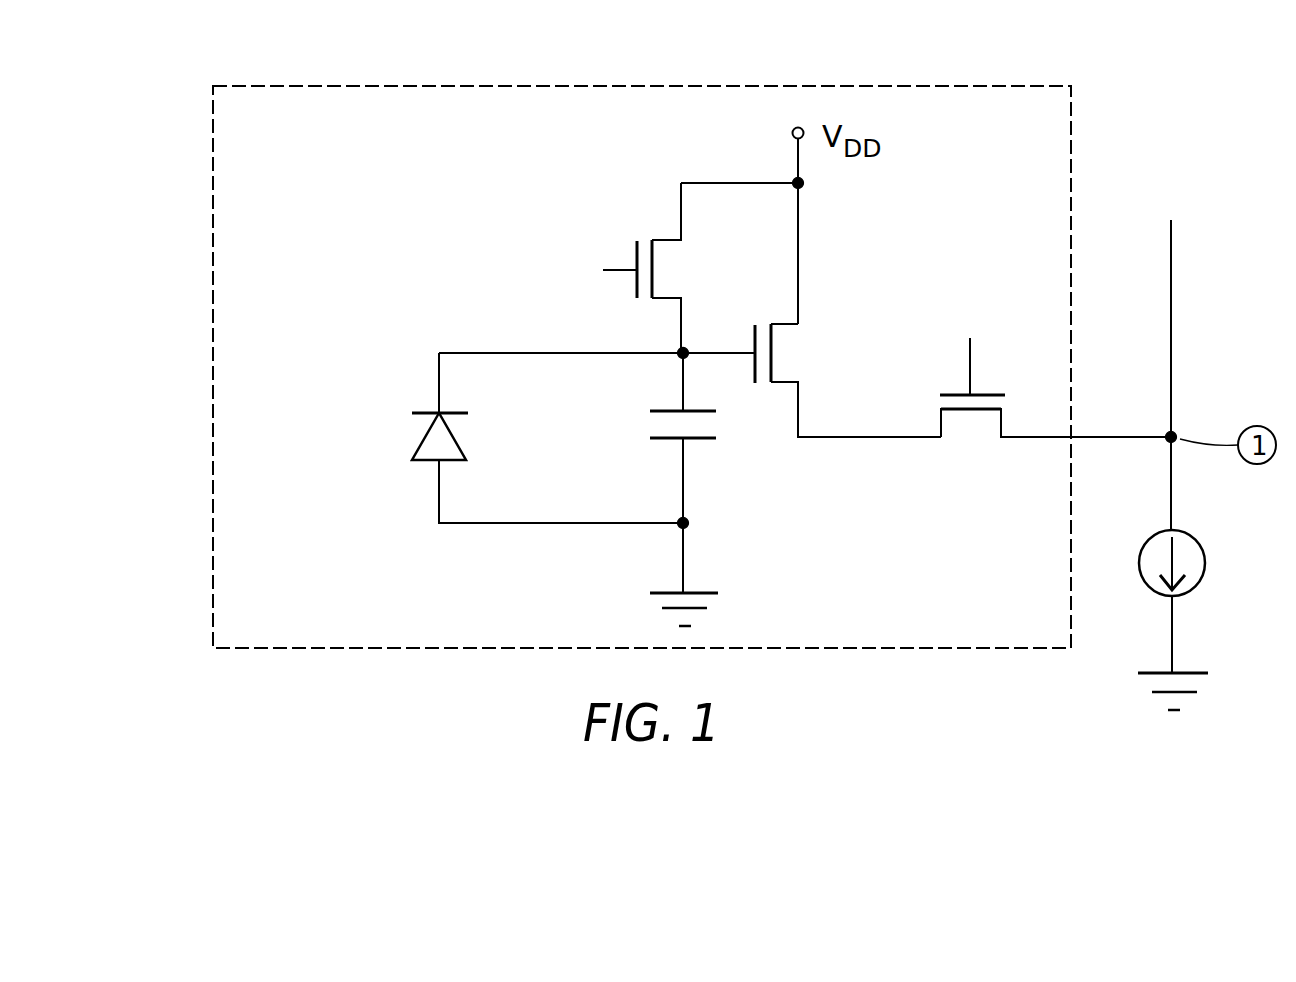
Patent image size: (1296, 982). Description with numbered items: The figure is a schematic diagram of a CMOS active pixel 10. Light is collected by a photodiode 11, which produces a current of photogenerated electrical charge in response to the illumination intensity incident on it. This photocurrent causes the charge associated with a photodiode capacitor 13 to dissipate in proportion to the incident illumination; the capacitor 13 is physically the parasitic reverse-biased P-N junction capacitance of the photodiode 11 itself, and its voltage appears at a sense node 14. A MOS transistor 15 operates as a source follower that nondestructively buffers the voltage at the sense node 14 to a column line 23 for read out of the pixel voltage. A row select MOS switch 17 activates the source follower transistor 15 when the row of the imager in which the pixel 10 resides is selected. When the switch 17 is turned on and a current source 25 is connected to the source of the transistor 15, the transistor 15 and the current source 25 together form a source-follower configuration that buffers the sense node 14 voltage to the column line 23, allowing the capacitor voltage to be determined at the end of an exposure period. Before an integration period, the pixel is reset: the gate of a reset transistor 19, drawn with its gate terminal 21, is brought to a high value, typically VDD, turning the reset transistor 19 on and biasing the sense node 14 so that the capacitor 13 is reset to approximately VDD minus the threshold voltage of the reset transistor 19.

The CMOS active pixel 10 is at (160, 150).
The photodiode 11 is at (419, 447).
The photodiode capacitor 13 is at (656, 411).
The sense node 14 is at (689, 346).
The MOS transistor 15 is at (780, 350).
The row select MOS switch 17 is at (980, 420).
The reset transistor 19 is at (636, 286).
The reset gate terminal 21 is at (603, 269).
The column line 23 is at (1171, 255).
The current source 25 is at (1203, 540).